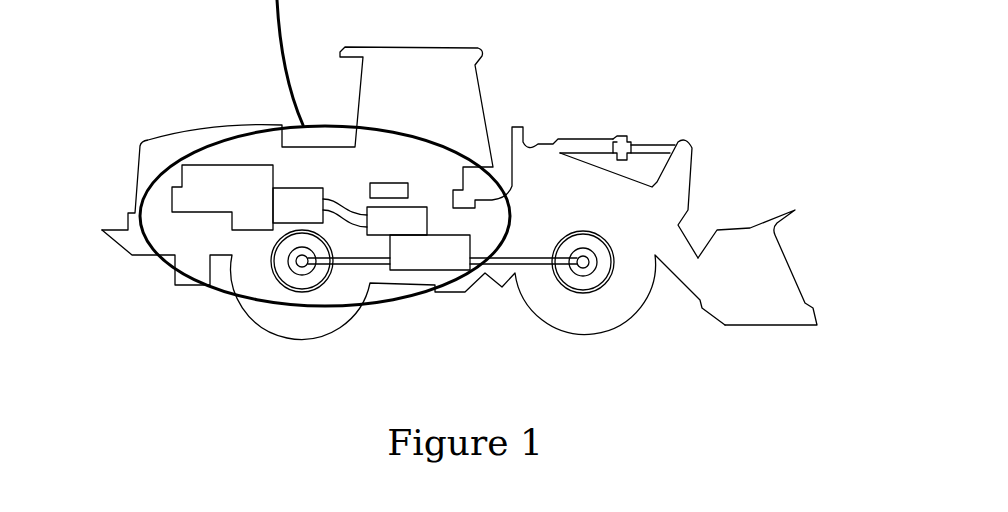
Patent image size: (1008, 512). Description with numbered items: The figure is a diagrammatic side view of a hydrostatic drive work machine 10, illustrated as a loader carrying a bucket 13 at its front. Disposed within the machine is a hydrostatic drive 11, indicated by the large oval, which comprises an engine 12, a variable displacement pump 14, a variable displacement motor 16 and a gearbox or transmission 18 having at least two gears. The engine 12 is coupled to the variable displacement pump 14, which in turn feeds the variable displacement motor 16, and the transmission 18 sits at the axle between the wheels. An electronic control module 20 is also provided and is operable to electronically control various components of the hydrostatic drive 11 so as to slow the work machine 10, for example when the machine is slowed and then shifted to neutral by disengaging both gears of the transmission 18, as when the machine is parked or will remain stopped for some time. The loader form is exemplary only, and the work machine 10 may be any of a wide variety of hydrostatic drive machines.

The hydrostatic drive work machine 10 is at (745, 159).
The hydrostatic drive 11 is at (408, 162).
The engine 12 is at (218, 195).
The bucket 13 is at (767, 288).
The variable displacement pump 14 is at (295, 200).
The variable displacement motor 16 is at (427, 220).
The transmission 18 is at (423, 257).
The electronic control module 20 is at (393, 193).